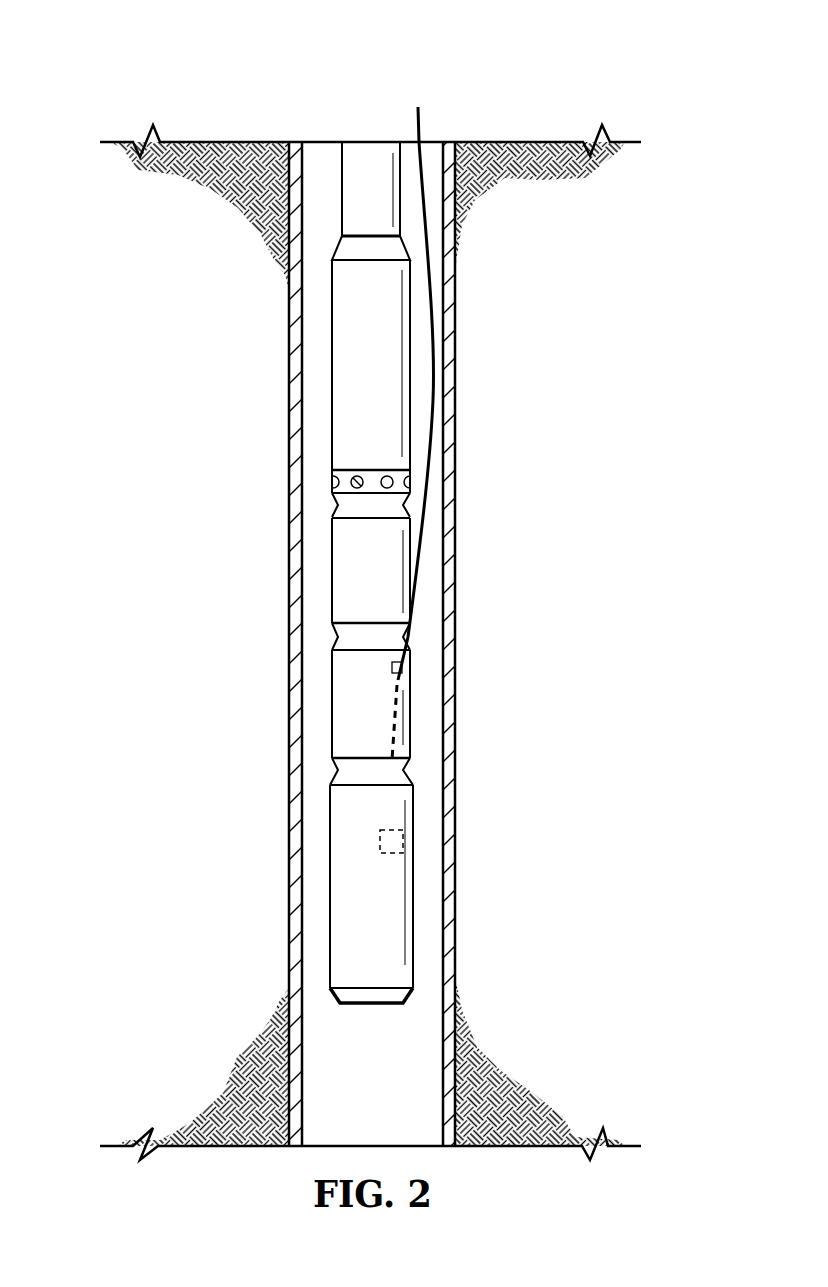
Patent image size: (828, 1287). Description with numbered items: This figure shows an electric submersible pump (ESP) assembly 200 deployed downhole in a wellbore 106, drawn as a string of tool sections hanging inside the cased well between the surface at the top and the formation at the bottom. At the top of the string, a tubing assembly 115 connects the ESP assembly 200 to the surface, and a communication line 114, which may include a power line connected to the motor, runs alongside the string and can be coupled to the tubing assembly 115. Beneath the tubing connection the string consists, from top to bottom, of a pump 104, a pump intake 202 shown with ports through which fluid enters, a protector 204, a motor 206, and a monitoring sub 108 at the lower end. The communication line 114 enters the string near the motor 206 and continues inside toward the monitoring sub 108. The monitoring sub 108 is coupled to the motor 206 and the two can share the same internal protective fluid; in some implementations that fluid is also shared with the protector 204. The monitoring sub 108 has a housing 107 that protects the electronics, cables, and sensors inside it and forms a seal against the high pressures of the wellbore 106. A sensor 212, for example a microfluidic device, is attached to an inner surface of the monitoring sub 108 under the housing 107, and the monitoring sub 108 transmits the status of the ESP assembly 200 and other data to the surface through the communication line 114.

The ESP assembly 200 is at (270, 65).
The pump 104 is at (332, 362).
The wellbore 106 is at (295, 443).
The housing 107 is at (330, 882).
The monitoring sub 108 is at (414, 891).
The communication line 114 is at (421, 126).
The tubing assembly 115 is at (342, 161).
The pump intake 202 is at (358, 474).
The protector 204 is at (332, 560).
The motor 206 is at (332, 708).
The sensor 212 is at (385, 855).